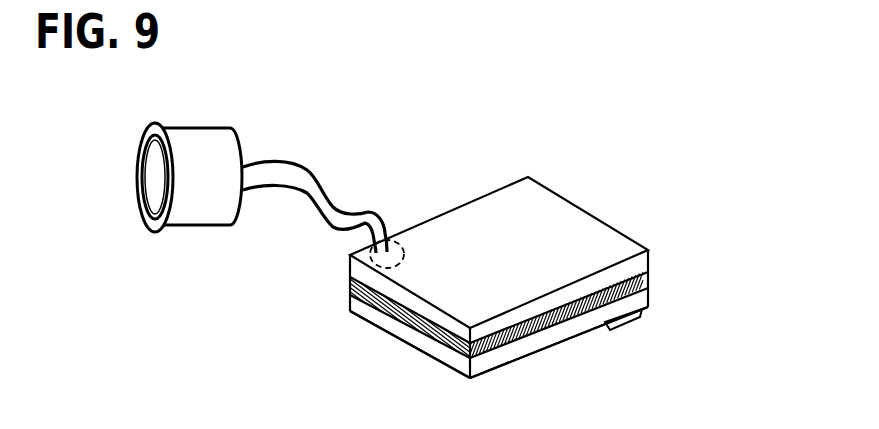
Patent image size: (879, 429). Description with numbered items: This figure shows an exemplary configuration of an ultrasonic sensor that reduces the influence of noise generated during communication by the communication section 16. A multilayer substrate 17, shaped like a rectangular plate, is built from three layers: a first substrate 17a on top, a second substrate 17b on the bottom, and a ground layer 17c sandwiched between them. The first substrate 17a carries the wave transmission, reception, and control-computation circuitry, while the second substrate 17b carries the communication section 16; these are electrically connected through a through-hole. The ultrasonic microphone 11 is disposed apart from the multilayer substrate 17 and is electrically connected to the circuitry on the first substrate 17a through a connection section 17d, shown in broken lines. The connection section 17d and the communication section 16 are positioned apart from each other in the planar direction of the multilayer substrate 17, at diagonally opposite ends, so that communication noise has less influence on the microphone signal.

The ultrasonic microphone 11 is at (205, 128).
The communication section 16 is at (625, 327).
The multilayer substrate 17 is at (548, 167).
The first substrate 17a is at (570, 215).
The second substrate 17b is at (550, 338).
The ground layer 17c is at (646, 278).
The connection section 17d is at (404, 240).